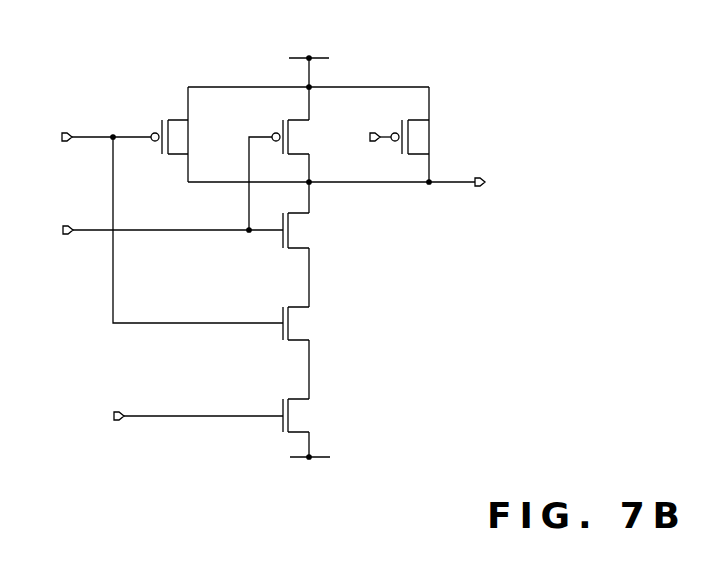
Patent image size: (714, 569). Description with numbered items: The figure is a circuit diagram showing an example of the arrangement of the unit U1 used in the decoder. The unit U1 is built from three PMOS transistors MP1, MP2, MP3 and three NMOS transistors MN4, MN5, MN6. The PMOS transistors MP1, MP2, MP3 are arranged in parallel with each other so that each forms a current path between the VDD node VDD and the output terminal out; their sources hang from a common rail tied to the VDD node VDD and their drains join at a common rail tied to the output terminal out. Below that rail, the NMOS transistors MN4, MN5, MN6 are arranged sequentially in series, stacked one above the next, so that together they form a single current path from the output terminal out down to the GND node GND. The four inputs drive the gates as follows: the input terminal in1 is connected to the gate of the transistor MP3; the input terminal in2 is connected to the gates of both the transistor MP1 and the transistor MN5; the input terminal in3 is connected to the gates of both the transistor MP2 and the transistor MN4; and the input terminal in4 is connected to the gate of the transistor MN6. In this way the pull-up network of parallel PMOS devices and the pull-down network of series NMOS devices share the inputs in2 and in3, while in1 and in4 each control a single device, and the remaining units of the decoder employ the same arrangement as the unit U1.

The unit U1 is at (132, 72).
The PMOS transistor MP1 is at (188, 137).
The PMOS transistor MP2 is at (309, 137).
The PMOS transistor MP3 is at (429, 137).
The NMOS transistor MN4 is at (315, 230).
The NMOS transistor MN5 is at (315, 323).
The NMOS transistor MN6 is at (314, 415).
The input terminal in1 is at (377, 127).
The input terminal in2 is at (158, 226).
The input terminal in3 is at (158, 187).
The input terminal in4 is at (182, 416).
The output terminal out is at (494, 182).
The VDD node VDD is at (307, 47).
The GND node GND is at (307, 473).